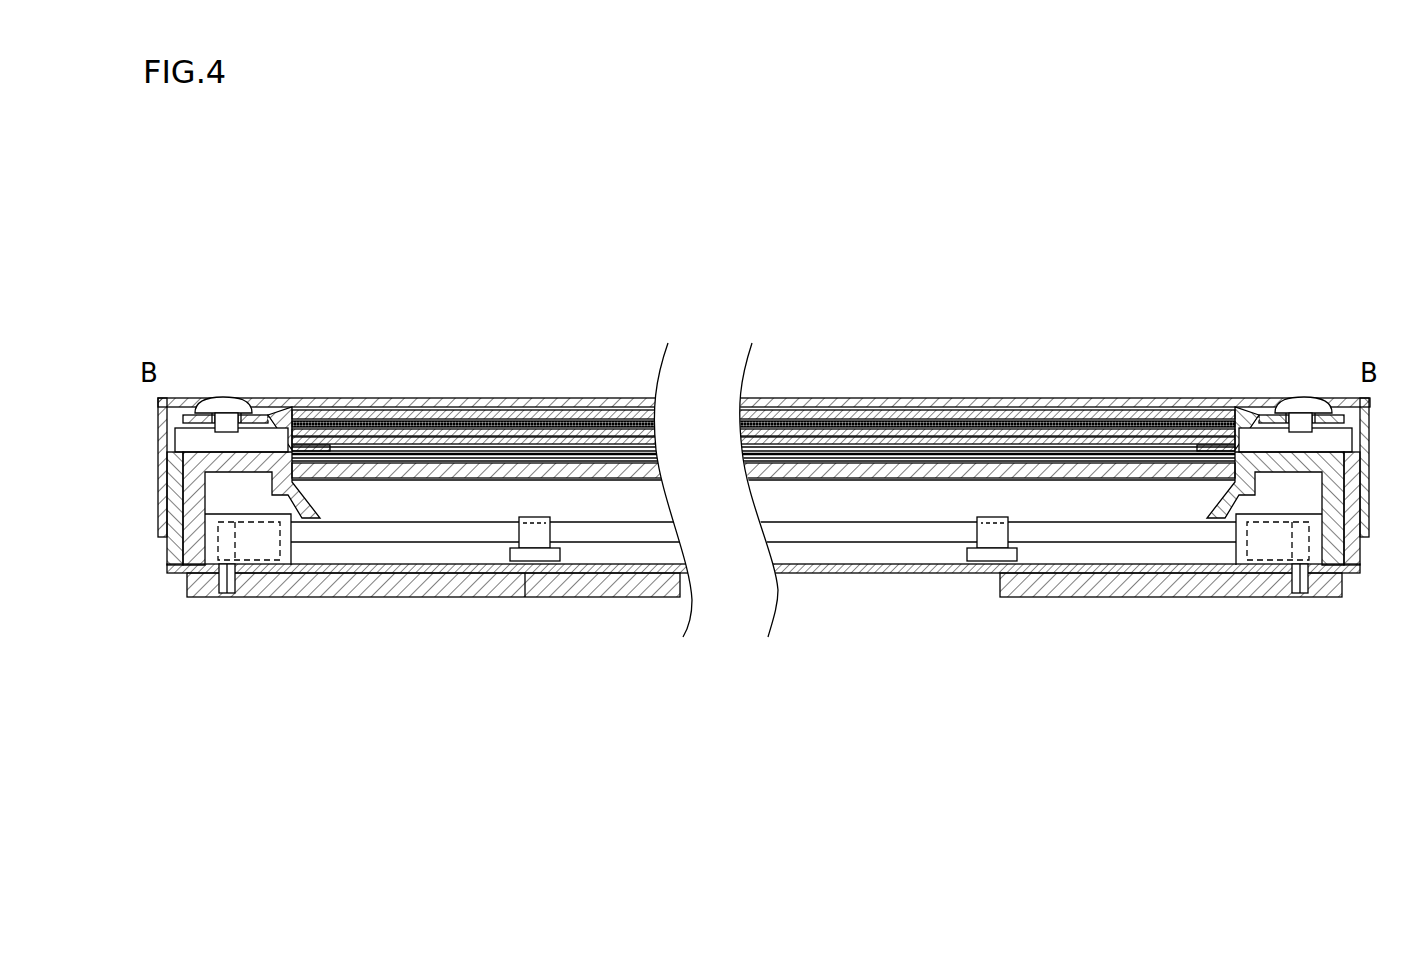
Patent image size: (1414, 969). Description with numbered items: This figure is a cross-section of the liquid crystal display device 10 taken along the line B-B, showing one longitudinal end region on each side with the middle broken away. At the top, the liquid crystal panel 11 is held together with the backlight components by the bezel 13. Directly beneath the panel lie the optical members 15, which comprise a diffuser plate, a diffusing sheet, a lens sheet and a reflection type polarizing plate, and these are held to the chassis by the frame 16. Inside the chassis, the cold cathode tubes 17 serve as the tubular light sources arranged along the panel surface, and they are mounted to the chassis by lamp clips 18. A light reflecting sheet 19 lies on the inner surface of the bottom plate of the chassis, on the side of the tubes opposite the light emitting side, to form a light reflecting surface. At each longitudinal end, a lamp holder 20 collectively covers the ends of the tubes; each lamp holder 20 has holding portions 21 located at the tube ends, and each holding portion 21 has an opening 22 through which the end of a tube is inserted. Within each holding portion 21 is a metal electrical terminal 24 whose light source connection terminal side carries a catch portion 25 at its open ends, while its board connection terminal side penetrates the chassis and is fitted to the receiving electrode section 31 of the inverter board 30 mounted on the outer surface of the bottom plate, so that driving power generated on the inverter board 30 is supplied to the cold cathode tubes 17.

The liquid crystal display device 10 is at (558, 364).
The liquid crystal panel 11 is at (933, 407).
The bezel 13 is at (295, 402).
The optical members 15 is at (1065, 472).
The frame 16 is at (320, 452).
The cold cathode tubes 17 is at (375, 536).
The lamp clips 18 is at (537, 532).
The light reflecting sheet 19 is at (930, 557).
The lamp holders 20 is at (192, 541).
The holding portions 21 is at (282, 558).
The opening 22 is at (213, 555).
The electrical terminal 24 is at (224, 583).
The catch portion 25 is at (258, 548).
The inverter board 30 is at (518, 585).
The receiving electrode section 31 is at (229, 583).